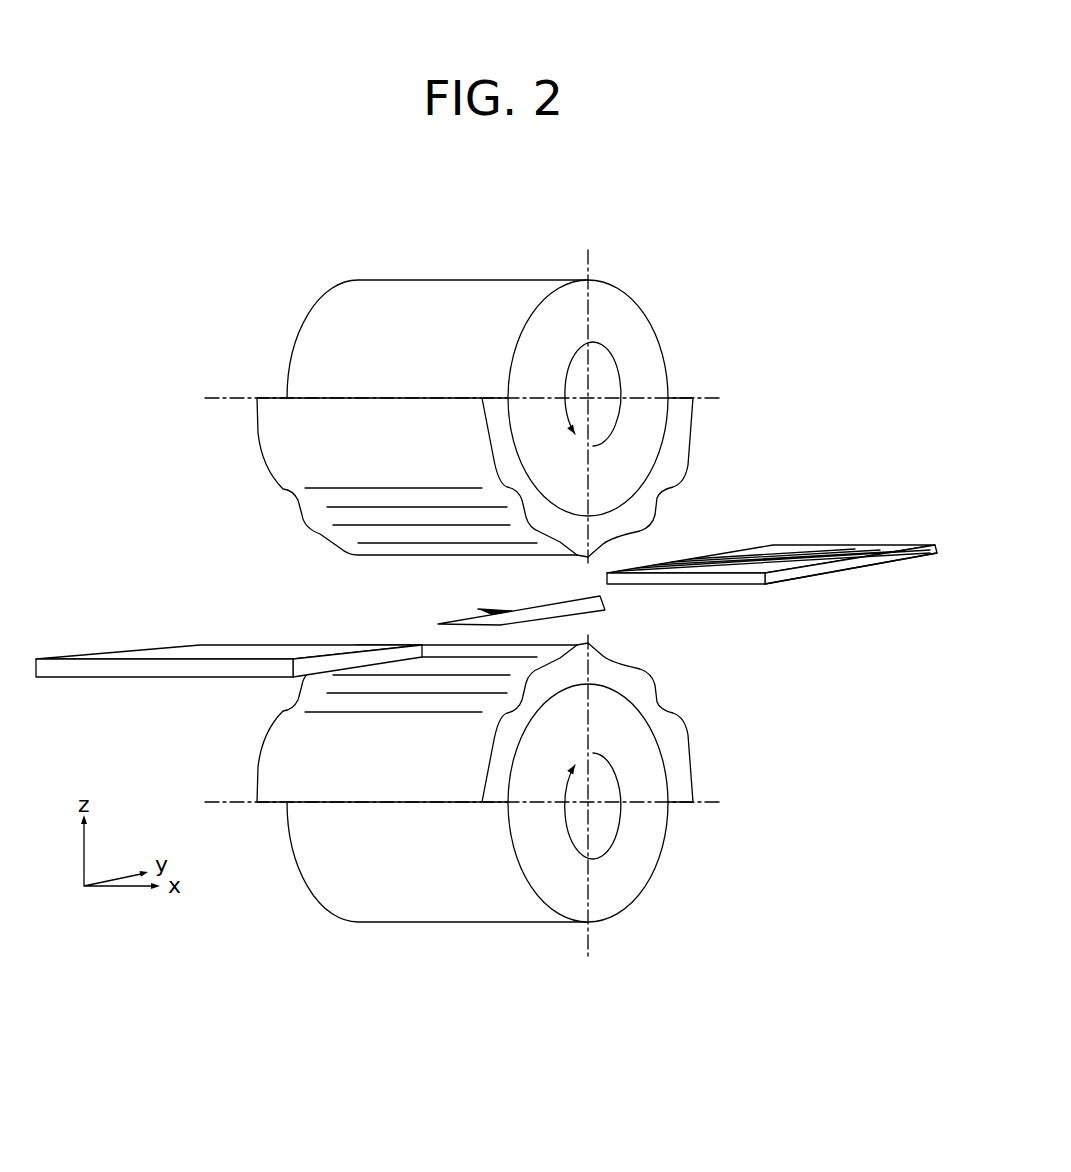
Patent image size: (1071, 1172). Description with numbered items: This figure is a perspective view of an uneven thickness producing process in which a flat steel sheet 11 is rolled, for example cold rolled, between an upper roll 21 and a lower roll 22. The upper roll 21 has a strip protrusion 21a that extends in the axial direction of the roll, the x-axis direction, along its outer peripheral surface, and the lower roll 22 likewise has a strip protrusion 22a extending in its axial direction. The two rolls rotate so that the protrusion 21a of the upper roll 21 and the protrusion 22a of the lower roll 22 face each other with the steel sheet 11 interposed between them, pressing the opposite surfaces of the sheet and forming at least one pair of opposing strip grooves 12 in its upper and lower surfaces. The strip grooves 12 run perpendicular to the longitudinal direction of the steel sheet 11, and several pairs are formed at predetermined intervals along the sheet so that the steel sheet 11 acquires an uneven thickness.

The steel sheet 11 is at (155, 657).
The strip groove 12 is at (792, 578).
The upper roll 21 is at (647, 338).
The strip protrusion 21a is at (305, 524).
The lower roll 22 is at (658, 840).
The strip protrusion 22a is at (653, 675).